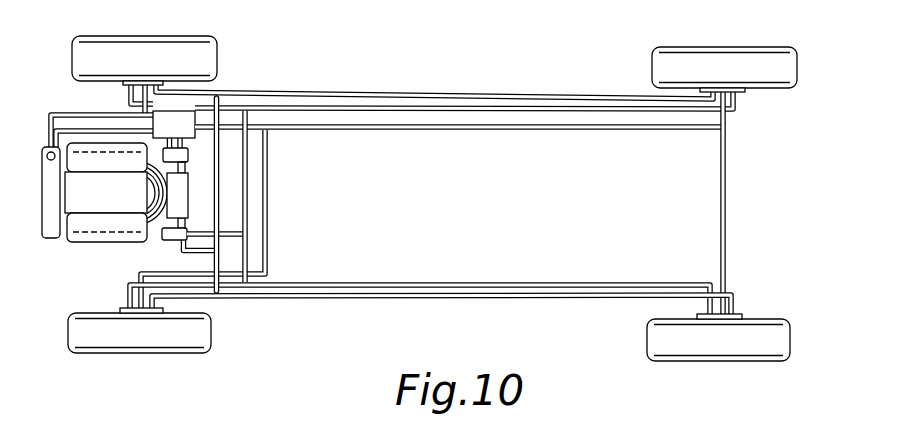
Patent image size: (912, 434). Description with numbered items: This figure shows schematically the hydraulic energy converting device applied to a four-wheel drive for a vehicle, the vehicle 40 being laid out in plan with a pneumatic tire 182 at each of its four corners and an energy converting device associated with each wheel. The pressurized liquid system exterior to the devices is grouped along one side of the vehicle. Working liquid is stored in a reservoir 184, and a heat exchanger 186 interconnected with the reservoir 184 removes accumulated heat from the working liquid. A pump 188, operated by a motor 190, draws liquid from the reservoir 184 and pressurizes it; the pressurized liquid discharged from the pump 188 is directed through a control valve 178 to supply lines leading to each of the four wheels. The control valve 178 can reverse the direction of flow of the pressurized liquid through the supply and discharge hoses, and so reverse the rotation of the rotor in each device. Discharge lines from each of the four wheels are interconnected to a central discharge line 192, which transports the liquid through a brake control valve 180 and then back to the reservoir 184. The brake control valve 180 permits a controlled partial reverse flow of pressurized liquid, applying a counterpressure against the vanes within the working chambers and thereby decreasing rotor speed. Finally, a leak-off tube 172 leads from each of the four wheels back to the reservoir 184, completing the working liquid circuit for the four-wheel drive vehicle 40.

The vehicle 40 is at (407, 7).
The leak-off tube 172 is at (265, 255).
The control valve 178 is at (167, 242).
The brake control valve 180 is at (186, 153).
The pneumatic tires 182 is at (135, 53).
The reservoir 184 is at (187, 117).
The heat exchanger 186 is at (52, 238).
The pump 188 is at (178, 207).
The motor 190 is at (117, 203).
The central discharge line 192 is at (232, 158).